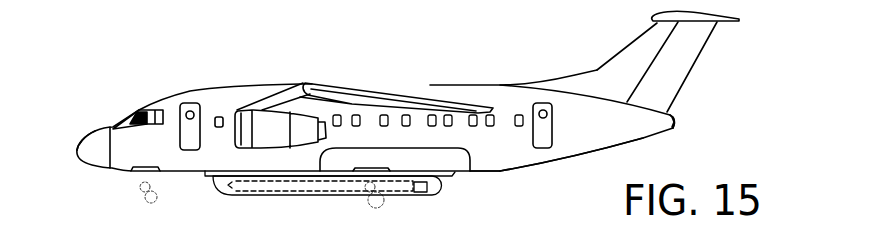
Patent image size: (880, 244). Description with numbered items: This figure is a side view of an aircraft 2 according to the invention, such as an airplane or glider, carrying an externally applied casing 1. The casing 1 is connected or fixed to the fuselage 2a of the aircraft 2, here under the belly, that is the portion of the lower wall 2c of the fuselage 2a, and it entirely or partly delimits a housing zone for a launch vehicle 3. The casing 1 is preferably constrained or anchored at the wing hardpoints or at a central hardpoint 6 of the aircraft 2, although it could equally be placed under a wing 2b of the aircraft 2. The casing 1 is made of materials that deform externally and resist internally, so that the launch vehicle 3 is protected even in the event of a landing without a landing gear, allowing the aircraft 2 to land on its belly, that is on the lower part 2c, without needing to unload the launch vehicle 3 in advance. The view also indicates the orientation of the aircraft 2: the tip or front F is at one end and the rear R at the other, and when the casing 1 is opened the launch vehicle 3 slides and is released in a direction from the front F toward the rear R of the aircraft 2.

The aircraft 2 is at (400, 117).
The fuselage 2a is at (522, 163).
The wing 2b is at (397, 86).
The lower part 2c is at (488, 170).
The casing 1 is at (227, 197).
The launch vehicle 3 is at (313, 191).
The central hardpoint 6 is at (207, 177).
The front F is at (82, 158).
The rear R is at (668, 128).